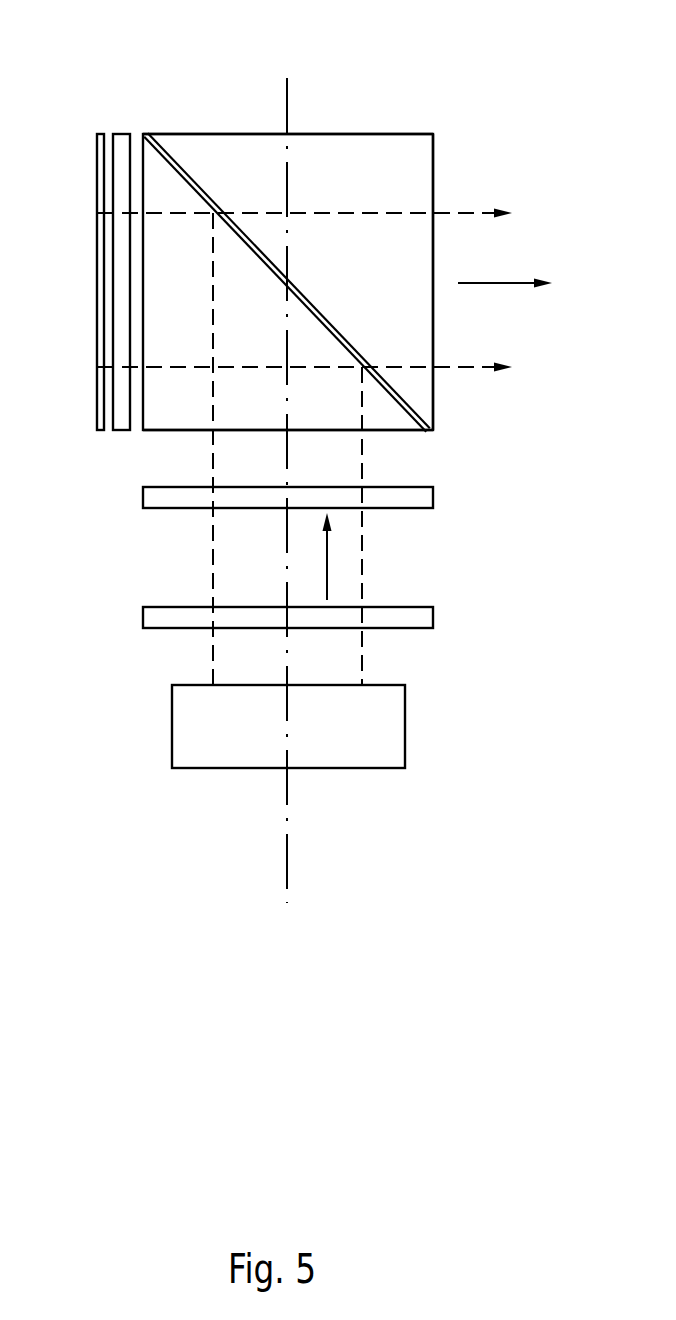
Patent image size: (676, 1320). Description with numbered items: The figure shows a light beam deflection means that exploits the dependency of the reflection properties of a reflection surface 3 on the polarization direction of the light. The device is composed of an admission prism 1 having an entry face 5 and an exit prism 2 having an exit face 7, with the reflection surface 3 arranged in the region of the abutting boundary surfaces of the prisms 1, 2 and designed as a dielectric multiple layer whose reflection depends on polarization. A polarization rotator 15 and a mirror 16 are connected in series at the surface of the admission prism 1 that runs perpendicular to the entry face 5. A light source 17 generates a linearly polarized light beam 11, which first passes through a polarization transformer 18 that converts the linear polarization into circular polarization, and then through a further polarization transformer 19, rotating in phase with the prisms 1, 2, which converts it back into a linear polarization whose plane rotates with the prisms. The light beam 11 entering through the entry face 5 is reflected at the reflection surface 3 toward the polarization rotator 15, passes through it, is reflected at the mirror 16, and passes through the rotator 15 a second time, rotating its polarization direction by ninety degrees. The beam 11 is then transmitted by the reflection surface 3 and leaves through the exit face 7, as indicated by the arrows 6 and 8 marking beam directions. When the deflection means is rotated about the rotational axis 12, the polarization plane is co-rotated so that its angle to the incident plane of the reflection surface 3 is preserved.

The admission prism 1 is at (168, 414).
The exit prism 2 is at (200, 142).
The reflection surface 3 is at (357, 353).
The entry face 5 is at (350, 432).
The light beam direction arrow 6 is at (330, 562).
The exit face 7 is at (433, 241).
The deflected light beam 8 is at (487, 282).
The light beam 11 is at (210, 542).
The rotational axis 12 is at (285, 100).
The polarization rotator 15 is at (122, 140).
The mirror 16 is at (99, 135).
The light source 17 is at (183, 718).
The polarization transformer 18 is at (150, 615).
The further polarization transformer 19 is at (150, 497).